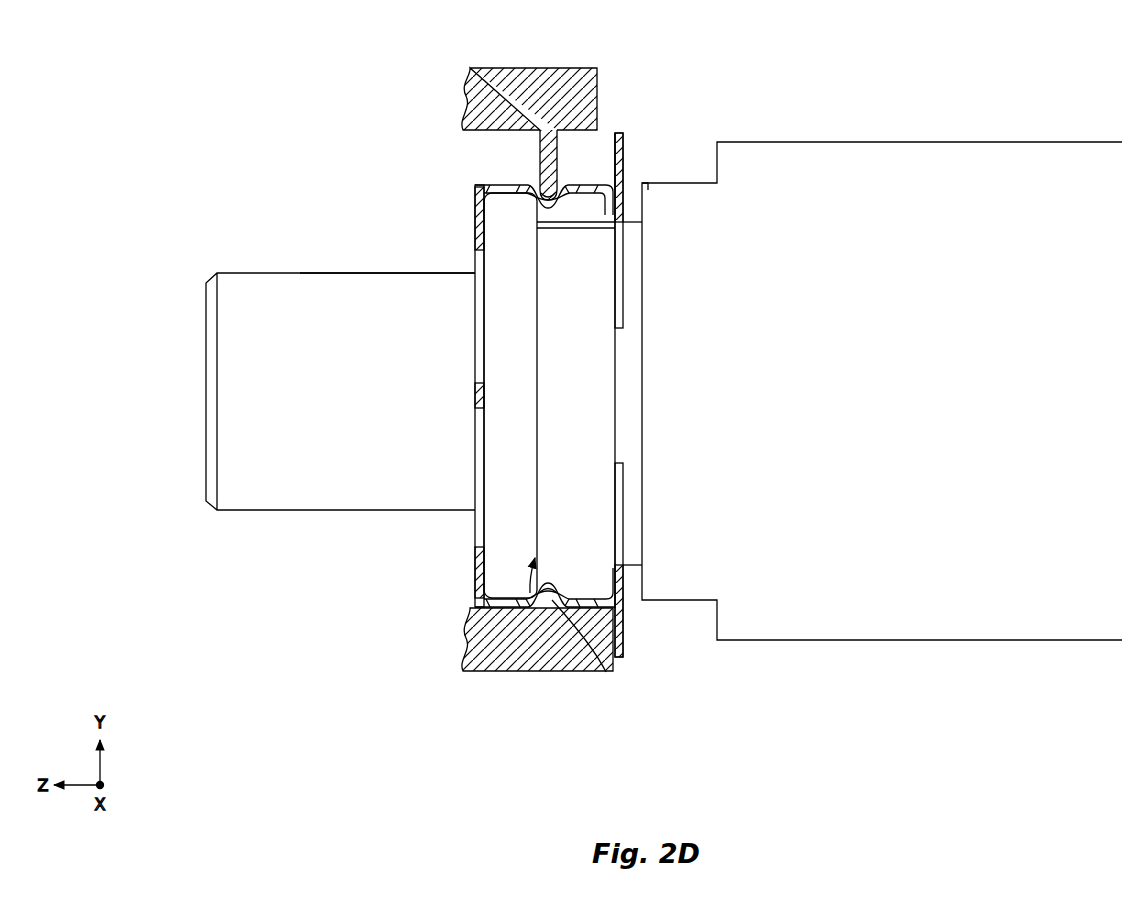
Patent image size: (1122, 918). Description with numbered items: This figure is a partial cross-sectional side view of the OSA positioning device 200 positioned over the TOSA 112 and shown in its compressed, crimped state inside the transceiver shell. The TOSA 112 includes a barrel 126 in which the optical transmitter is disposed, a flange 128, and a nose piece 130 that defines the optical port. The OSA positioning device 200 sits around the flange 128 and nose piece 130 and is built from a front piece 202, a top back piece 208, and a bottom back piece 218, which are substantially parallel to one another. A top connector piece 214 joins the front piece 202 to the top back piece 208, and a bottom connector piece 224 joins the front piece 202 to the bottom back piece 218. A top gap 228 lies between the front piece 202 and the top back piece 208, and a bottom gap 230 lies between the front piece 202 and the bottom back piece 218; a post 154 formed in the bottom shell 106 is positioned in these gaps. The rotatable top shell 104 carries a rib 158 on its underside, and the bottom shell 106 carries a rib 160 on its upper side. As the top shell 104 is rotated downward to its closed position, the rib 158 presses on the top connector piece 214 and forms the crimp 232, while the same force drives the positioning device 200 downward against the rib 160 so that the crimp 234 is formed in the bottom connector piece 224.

The rotatable top shell 104 is at (484, 97).
The rib 158 is at (546, 152).
The crimp 232 is at (542, 188).
The top connector piece 214 is at (510, 190).
The front piece 202 is at (472, 203).
The flange 128 is at (528, 244).
The TOSA 112 is at (318, 268).
The nose piece 130 is at (361, 402).
The barrel 126 is at (931, 402).
The post 154 is at (591, 516).
The top gap 228 is at (589, 213).
The top back piece 208 is at (623, 204).
The bottom back piece 218 is at (622, 622).
The bottom shell 106 is at (573, 673).
The bottom connector piece 224 is at (498, 608).
The bottom gap 230 is at (546, 600).
The crimp 234 is at (550, 600).
The rib 160 is at (606, 672).
The OSA positioning device 200 is at (438, 563).